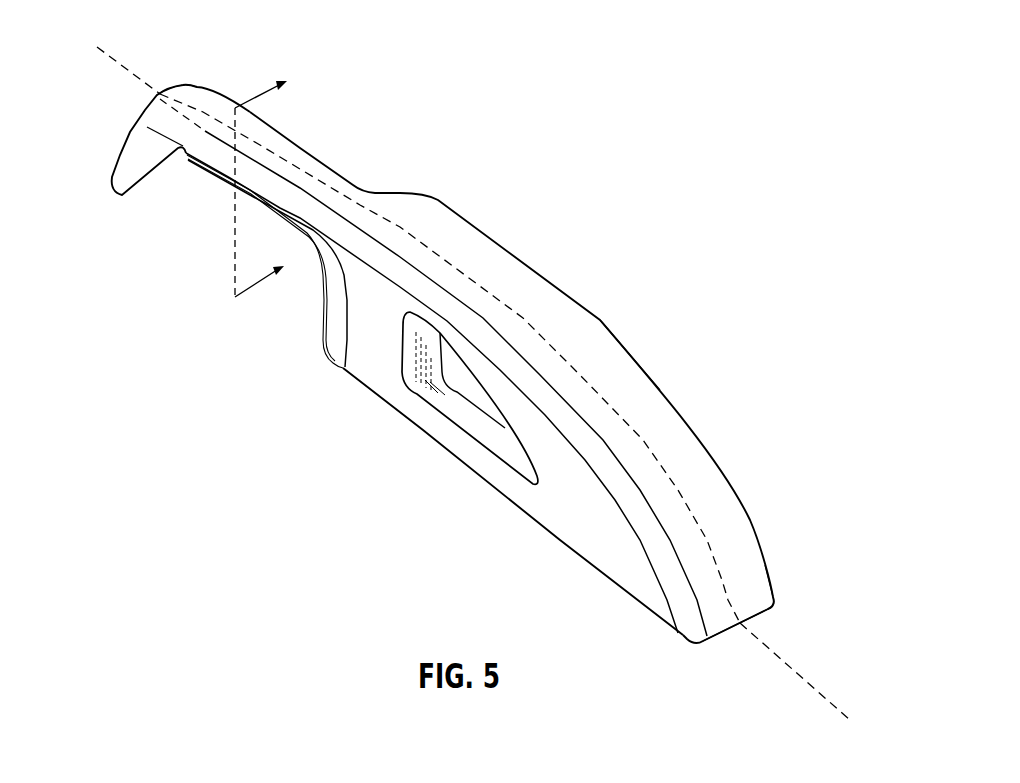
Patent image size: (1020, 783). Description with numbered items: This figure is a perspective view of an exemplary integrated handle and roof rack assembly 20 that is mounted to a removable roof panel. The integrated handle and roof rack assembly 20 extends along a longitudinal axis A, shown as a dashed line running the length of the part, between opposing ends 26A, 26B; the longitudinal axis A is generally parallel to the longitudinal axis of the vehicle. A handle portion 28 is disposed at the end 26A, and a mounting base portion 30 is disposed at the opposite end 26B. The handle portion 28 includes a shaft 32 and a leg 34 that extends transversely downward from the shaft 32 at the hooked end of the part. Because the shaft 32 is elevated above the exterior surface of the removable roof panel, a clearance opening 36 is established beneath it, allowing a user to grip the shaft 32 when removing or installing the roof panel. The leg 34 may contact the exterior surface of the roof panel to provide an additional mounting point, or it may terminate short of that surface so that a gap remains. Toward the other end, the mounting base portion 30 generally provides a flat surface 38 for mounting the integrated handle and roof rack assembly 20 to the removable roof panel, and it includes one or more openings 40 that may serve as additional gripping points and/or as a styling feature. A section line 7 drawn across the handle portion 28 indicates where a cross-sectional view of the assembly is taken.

The integrated handle and roof rack assembly 20 is at (510, 193).
The end 26A is at (199, 80).
The end 26B is at (782, 551).
The handle portion 28 is at (309, 141).
The mounting base portion 30 is at (535, 278).
The shaft 32 is at (213, 153).
The leg 34 is at (123, 172).
The clearance opening 36 is at (221, 236).
The flat surface 38 is at (540, 527).
The opening 40 is at (453, 390).
The section line 7- 7 is at (270, 180).
The longitudinal axis A is at (829, 693).